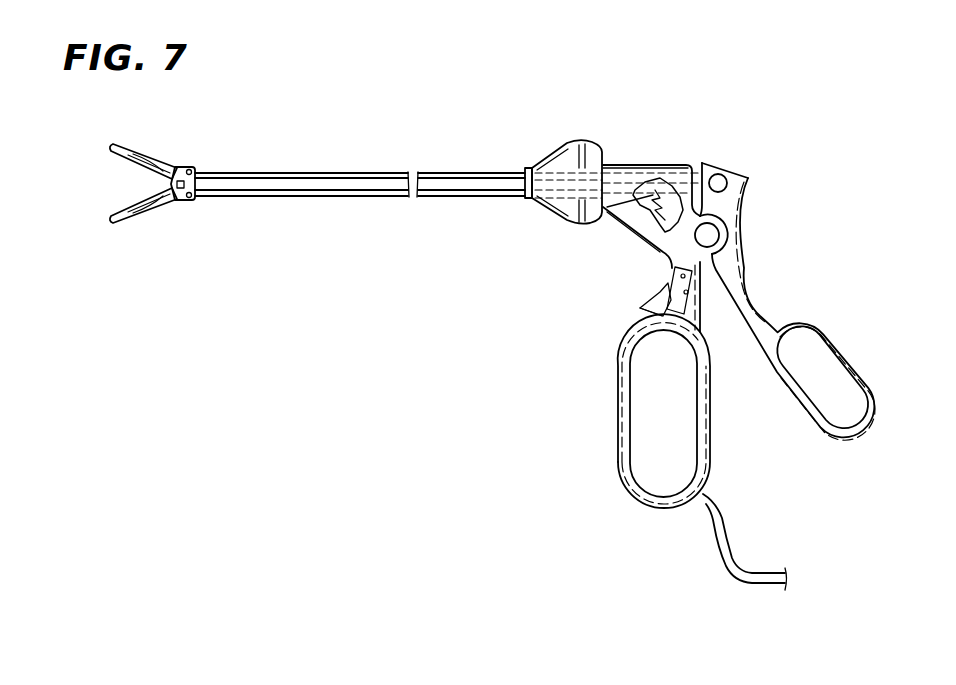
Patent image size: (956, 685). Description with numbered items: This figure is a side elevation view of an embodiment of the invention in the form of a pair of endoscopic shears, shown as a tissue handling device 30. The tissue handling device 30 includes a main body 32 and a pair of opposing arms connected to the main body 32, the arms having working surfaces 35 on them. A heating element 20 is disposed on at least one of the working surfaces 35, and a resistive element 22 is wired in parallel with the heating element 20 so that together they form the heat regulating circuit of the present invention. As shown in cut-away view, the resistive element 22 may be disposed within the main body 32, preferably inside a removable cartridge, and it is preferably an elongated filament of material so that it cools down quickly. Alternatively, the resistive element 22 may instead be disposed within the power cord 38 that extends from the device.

The heating element 20 is at (128, 183).
The resistive element 22 is at (650, 218).
The tissue handling device 30 is at (374, 162).
The main body 32 is at (700, 305).
The working surfaces 35 is at (121, 171).
The power cord 38 is at (728, 558).